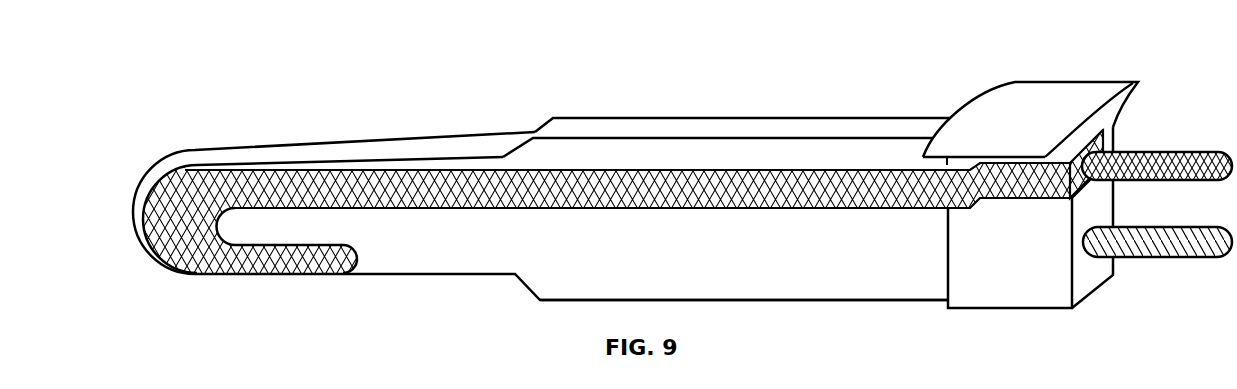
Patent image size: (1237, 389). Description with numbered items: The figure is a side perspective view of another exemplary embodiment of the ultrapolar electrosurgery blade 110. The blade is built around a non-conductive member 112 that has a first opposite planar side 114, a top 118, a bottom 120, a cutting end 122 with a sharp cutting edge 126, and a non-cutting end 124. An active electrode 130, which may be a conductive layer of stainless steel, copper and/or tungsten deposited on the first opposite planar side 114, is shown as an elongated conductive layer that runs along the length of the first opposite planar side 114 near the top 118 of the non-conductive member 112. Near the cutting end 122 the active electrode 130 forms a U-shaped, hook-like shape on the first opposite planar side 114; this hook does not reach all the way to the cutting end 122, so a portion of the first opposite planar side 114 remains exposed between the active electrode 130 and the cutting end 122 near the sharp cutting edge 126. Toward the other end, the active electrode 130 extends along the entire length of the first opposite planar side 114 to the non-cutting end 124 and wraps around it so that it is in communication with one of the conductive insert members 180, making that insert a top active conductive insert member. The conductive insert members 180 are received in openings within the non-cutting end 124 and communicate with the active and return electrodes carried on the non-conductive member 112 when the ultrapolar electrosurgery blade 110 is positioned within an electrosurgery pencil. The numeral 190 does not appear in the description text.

The ultrapolar electrosurgery blade 110 is at (768, 69).
The non-conductive member 112 is at (602, 150).
The first opposite planar side 114 is at (713, 260).
The top 118 is at (847, 127).
The bottom 120 is at (828, 304).
The cutting end 122 is at (126, 215).
The non-cutting end 124 is at (1097, 208).
The sharp cutting edge 126 is at (158, 268).
The active electrode 130 is at (238, 181).
The conductive insert members 180 is at (1167, 150).
The flap 190 is at (1037, 107).